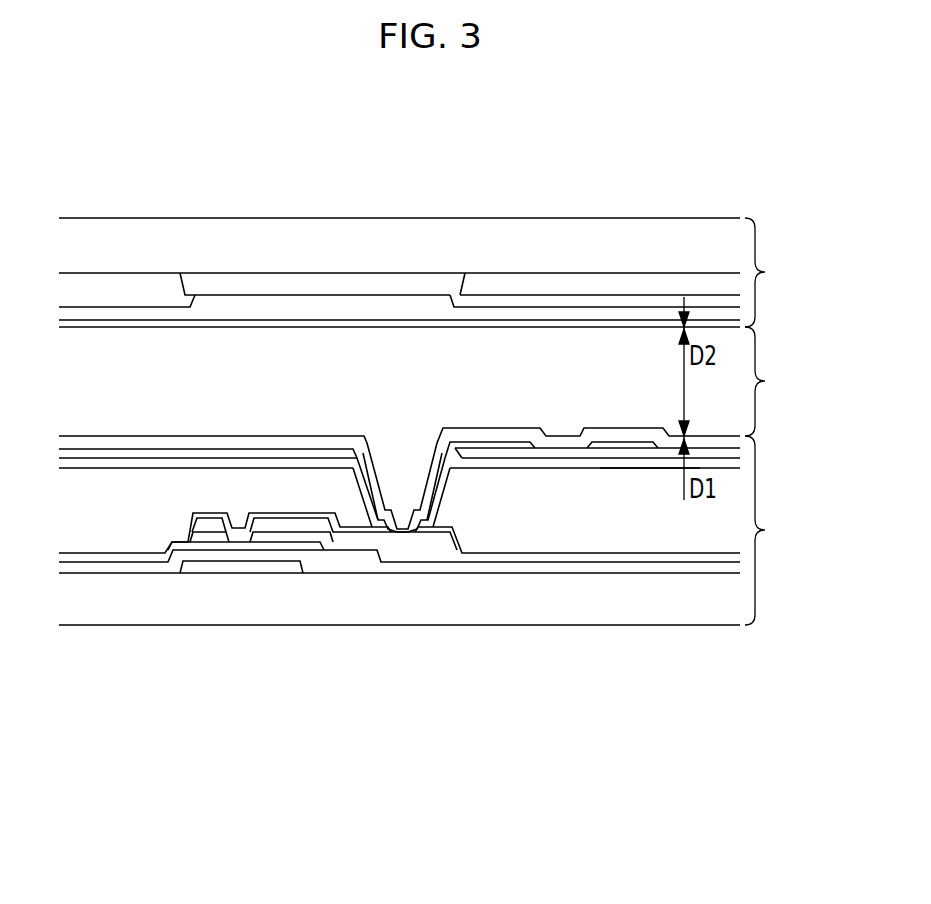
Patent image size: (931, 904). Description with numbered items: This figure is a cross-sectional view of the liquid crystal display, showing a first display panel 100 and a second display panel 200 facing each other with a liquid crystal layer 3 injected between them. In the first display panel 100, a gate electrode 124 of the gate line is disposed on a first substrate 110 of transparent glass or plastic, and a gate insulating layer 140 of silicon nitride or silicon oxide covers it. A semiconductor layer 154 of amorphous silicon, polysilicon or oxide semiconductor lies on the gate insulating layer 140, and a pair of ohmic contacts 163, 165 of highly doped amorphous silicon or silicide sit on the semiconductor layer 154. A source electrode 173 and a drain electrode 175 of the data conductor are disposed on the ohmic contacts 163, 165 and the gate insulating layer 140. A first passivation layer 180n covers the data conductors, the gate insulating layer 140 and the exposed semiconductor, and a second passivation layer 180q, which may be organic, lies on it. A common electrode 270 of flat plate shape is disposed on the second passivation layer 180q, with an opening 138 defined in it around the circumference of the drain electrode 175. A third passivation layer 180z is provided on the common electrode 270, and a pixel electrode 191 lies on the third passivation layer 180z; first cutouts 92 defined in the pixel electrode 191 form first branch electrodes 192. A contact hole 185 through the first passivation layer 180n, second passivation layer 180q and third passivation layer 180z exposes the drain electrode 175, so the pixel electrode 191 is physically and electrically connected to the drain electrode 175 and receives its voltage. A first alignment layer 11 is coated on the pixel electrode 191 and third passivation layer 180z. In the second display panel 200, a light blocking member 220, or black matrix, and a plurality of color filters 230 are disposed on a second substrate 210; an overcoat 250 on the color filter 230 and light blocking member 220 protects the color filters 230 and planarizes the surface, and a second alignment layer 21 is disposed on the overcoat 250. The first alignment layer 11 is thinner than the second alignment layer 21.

The liquid crystal layer 3 is at (763, 381).
The first alignment layer 11 is at (323, 434).
The second alignment layer 21 is at (592, 325).
The first cutouts 92 is at (580, 447).
The first display panel 100 is at (774, 530).
The first substrate 110 is at (690, 605).
The gate electrode 124 is at (243, 568).
The opening 138 is at (380, 455).
The gate insulating layer 140 is at (113, 565).
The semiconductor layer 154 is at (328, 550).
The ohmic contact 163 is at (206, 530).
The ohmic contact 165 is at (372, 545).
The source electrode 173 is at (216, 525).
The drain electrode 175 is at (434, 542).
The first passivation layer 180n is at (517, 556).
The second passivation layer 180q is at (590, 527).
The third passivation layer 180z is at (717, 456).
The contact hole 185 is at (395, 543).
The pixel electrode 191 is at (500, 442).
The first branch electrodes 192 is at (647, 442).
The second display panel 200 is at (774, 272).
The second substrate 210 is at (670, 240).
The light blocking member 220 is at (272, 282).
The color filter 230 is at (128, 290).
The overcoat 250 is at (372, 303).
The common electrode 270 is at (655, 470).